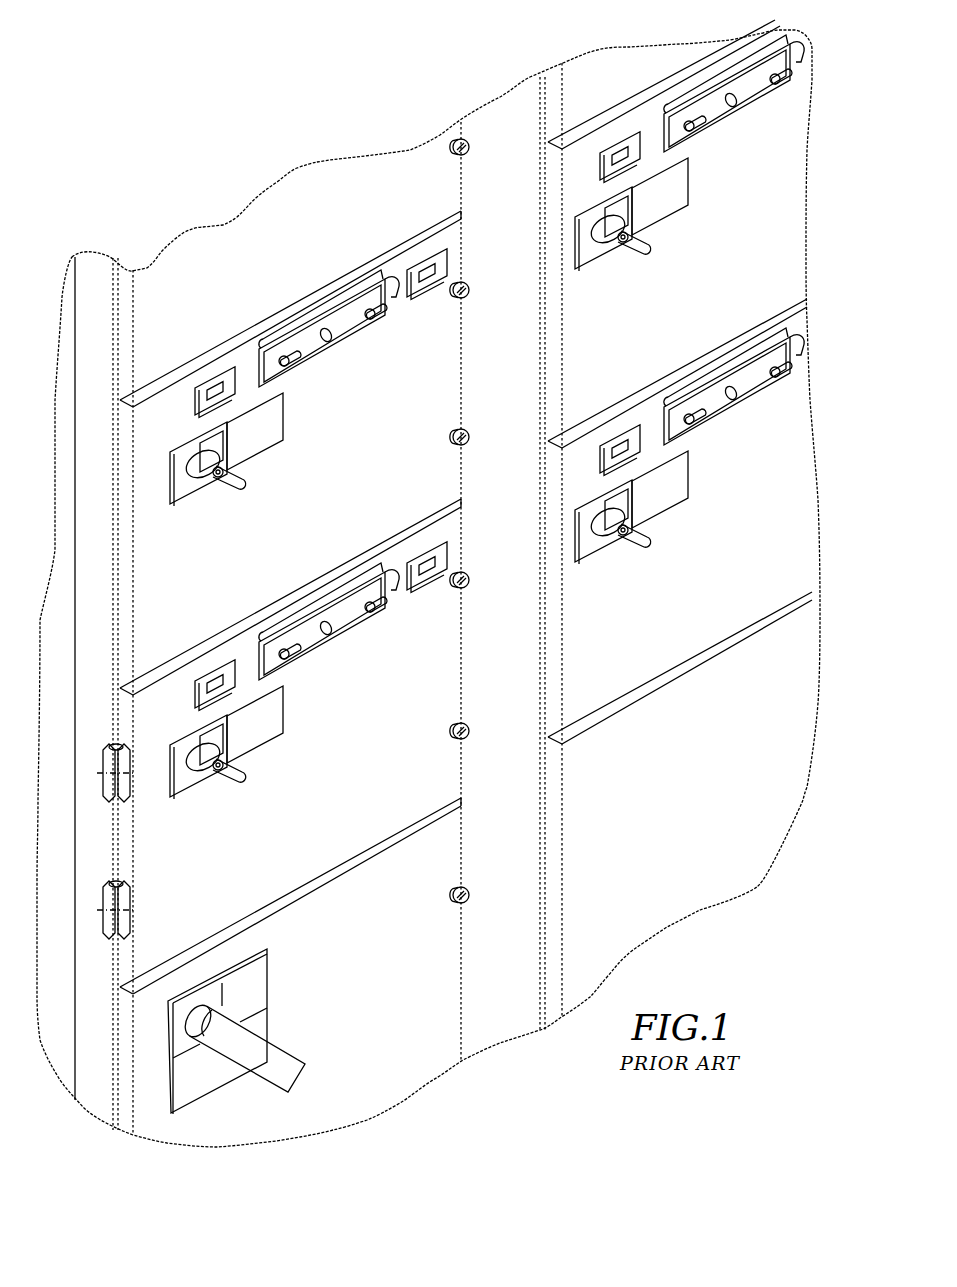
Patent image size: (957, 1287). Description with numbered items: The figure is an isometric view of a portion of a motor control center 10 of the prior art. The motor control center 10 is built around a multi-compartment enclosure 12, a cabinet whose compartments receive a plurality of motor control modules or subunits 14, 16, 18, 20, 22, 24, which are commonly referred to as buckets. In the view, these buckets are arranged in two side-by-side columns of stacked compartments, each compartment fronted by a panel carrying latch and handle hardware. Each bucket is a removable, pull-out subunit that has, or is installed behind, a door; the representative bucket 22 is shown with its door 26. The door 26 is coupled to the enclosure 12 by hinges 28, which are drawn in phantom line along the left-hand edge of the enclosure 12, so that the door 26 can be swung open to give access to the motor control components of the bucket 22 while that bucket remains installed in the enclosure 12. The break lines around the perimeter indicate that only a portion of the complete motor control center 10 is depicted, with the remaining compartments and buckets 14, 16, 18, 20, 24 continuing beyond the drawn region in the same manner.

The motor control center 10 is at (822, 162).
The multi-compartment enclosure 12 is at (113, 828).
The motor control module or subunit 14 is at (783, 263).
The motor control module or subunit 16 is at (120, 300).
The motor control module or subunit 18 is at (123, 1025).
The motor control module or subunit 20 is at (790, 700).
The motor control module or subunit 22 is at (127, 718).
The motor control module or subunit 24 is at (793, 512).
The door 26 is at (314, 820).
The hinges 28 is at (100, 763).